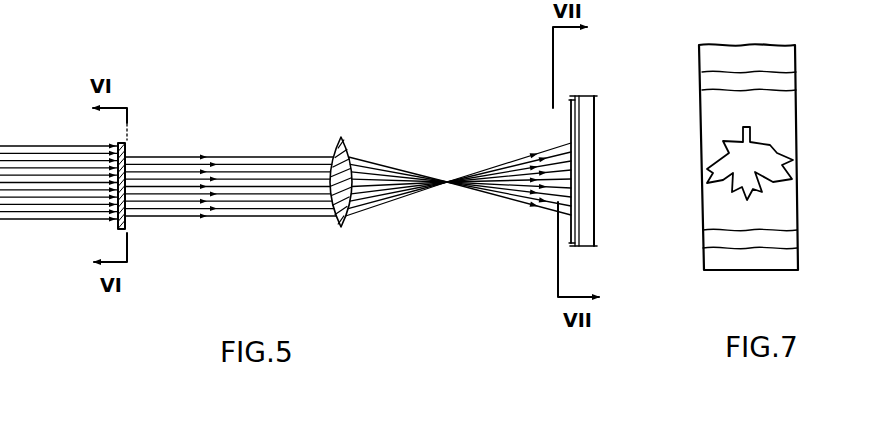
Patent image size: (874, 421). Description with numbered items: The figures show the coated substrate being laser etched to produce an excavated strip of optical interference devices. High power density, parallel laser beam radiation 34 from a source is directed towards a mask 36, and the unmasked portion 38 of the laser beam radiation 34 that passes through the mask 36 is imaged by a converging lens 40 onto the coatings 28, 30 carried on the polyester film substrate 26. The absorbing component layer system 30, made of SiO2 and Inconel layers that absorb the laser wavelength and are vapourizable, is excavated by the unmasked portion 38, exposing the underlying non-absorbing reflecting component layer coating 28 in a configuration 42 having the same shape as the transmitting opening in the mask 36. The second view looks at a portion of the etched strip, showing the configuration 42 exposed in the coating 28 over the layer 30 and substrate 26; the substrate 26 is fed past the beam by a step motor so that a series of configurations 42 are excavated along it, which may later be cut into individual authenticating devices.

In FIG. 5, the polyester film substrate 26 is at (587, 230).
In FIG. 7, the polyester film substrate 26 is at (780, 260).
In FIG. 5, the component layer coating 28 is at (582, 183).
In FIG. 7, the component layer coating 28 is at (780, 240).
In FIG. 5, the component layer system 30 is at (575, 152).
In FIG. 7, the component layer system 30 is at (765, 213).
In FIG. 5, the laser beam radiation 34 is at (62, 220).
In FIG. 5, the mask 36 is at (125, 143).
In FIG. 5, the unmasked portion of the laser beam radiation 38 is at (173, 158).
In FIG. 5, the converging lens 40 is at (343, 141).
In FIG. 7, the configuration 42 is at (772, 158).